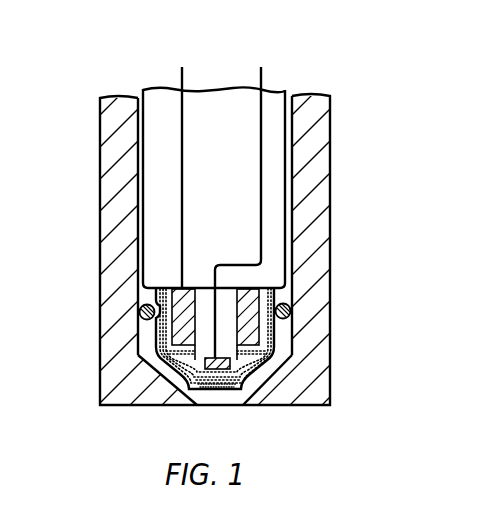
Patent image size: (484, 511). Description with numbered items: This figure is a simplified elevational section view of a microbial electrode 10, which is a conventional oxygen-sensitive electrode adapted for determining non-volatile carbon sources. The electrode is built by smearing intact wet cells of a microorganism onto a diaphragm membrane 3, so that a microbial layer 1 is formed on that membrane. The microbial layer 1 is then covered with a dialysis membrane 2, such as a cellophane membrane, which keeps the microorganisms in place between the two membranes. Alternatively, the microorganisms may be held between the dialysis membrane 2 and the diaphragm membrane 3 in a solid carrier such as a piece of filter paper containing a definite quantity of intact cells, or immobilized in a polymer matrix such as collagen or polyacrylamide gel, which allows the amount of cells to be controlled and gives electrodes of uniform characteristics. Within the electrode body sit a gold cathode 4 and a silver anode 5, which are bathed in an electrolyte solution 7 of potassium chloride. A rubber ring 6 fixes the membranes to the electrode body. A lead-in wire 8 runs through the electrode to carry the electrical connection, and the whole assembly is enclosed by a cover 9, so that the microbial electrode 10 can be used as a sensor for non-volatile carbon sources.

The microbial layer 1 is at (233, 389).
The dialysis membrane 2 is at (156, 337).
The diaphragm membrane 3 is at (158, 361).
The gold cathode 4 is at (264, 366).
The silver anode 5 is at (253, 297).
The rubber ring 6 is at (139, 308).
The electrolyte solution 7 is at (274, 328).
The lead-in wire 8 is at (261, 140).
The cover 9 is at (113, 397).
The microbial electrode 10 is at (348, 184).